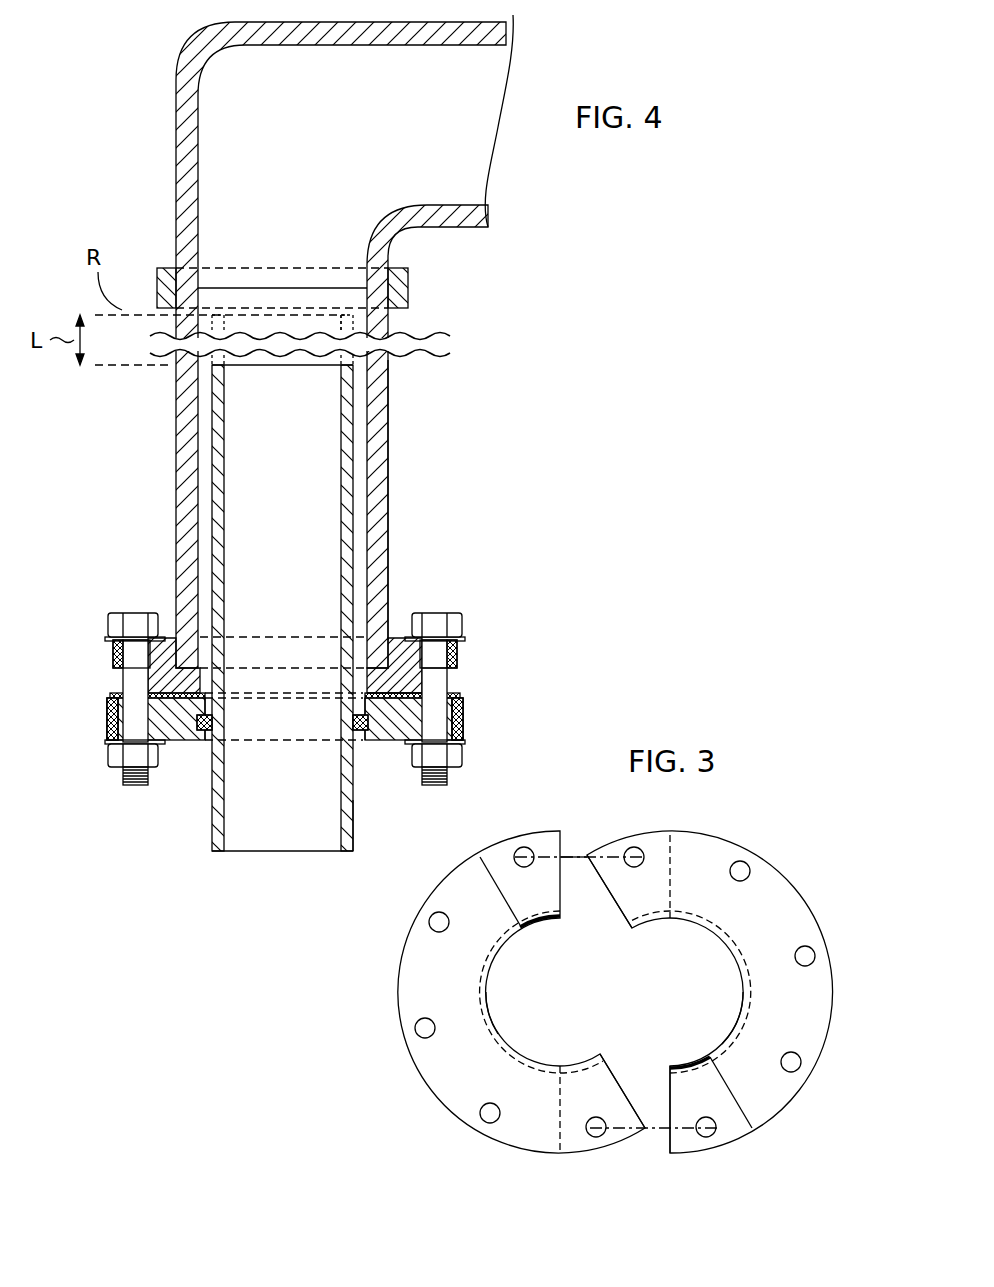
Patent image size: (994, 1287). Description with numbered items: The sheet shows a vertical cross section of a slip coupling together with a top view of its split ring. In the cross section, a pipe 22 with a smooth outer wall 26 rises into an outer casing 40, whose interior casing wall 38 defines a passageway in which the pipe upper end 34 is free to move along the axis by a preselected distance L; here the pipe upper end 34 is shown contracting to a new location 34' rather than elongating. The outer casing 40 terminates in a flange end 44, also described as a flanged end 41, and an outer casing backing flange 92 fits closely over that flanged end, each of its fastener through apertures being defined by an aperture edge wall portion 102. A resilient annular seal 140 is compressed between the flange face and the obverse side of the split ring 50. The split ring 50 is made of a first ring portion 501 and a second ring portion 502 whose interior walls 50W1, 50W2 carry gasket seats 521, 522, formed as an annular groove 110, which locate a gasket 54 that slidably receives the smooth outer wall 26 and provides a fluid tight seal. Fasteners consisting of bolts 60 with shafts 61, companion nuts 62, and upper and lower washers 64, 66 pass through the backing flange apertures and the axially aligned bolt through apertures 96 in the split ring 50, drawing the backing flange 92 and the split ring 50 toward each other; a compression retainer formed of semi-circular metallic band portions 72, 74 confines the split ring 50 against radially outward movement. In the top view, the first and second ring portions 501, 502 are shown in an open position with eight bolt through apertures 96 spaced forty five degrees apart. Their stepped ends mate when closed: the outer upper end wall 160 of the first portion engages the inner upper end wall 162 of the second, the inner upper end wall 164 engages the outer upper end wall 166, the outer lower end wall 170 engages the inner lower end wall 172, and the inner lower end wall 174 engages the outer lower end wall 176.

In FIG. 4, the pipe 22 is at (222, 838).
In FIG. 4, the smooth outer wall 26 is at (357, 812).
In FIG. 4, the pipe upper end 34 is at (437, 500).
In FIG. 4, the new location of pipe upper end 34' is at (417, 286).
In FIG. 4, the interior casing wall 38 is at (205, 514).
In FIG. 4, the outer casing 40 is at (185, 461).
In FIG. 4, the flanged end 41 is at (425, 673).
In FIG. 4, the flange end 44 is at (162, 693).
In FIG. 3, the split ring 50 is at (740, 820).
In FIG. 4, the first ring portion 501 is at (455, 708).
In FIG. 3, the first ring portion 501 is at (777, 876).
In FIG. 4, the second ring portion 502 is at (117, 697).
In FIG. 3, the second ring portion 502 is at (527, 836).
In FIG. 4, the gasket seat 521 is at (370, 718).
In FIG. 3, the gasket seat 521 is at (733, 945).
In FIG. 4, the gasket seat 522 is at (200, 733).
In FIG. 3, the gasket seat 522 is at (498, 953).
In FIG. 4, the gasket 54 is at (212, 730).
In FIG. 4, the bolt 60 is at (129, 625).
In FIG. 4, the shaft 61 is at (133, 682).
In FIG. 4, the nut 62 is at (152, 762).
In FIG. 4, the upper washer 64 is at (106, 638).
In FIG. 4, the lower washer 66 is at (122, 727).
In FIG. 4, the semi-circular metallic band portion 72 is at (108, 722).
In FIG. 4, the semi-circular metallic band portion 74 is at (465, 720).
In FIG. 4, the outer casing backing flange 92 is at (455, 658).
In FIG. 4, the bolt through aperture 96 is at (110, 720).
In FIG. 3, the bolt through aperture 96 is at (807, 955).
In FIG. 4, the aperture edge wall portion 102 is at (118, 655).
In FIG. 4, the annular groove 110 is at (362, 705).
In FIG. 4, the annular seal 140 is at (383, 693).
In FIG. 3, the outer upper end wall 160 is at (621, 910).
In FIG. 3, the inner upper end wall 162 is at (496, 872).
In FIG. 3, the inner upper end wall 164 is at (742, 1128).
In FIG. 3, the outer upper end wall 166 is at (620, 1085).
In FIG. 3, the outer lower end wall 170 is at (670, 1145).
In FIG. 3, the inner lower end wall 172 is at (567, 1068).
In FIG. 3, the inner lower end wall 174 is at (664, 853).
In FIG. 3, the outer lower end wall 176 is at (562, 893).
In FIG. 3, the interior wall 50W1 is at (743, 978).
In FIG. 3, the interior wall 50W2 is at (486, 1006).